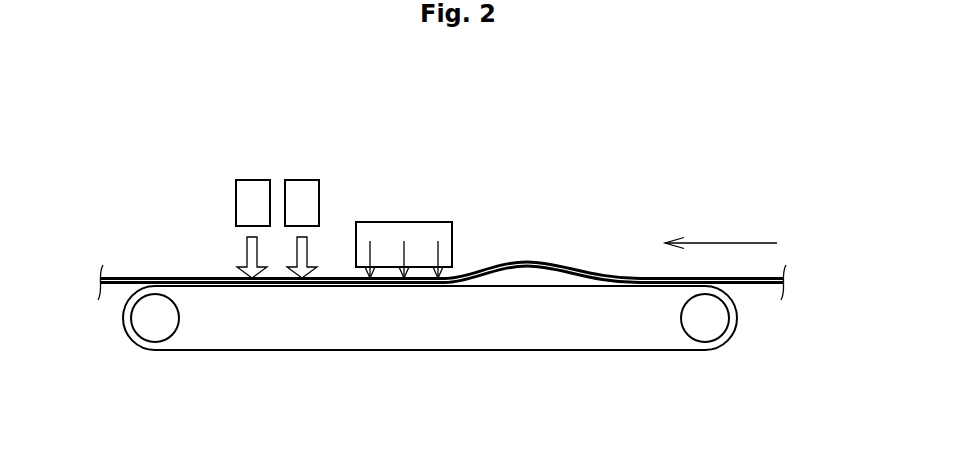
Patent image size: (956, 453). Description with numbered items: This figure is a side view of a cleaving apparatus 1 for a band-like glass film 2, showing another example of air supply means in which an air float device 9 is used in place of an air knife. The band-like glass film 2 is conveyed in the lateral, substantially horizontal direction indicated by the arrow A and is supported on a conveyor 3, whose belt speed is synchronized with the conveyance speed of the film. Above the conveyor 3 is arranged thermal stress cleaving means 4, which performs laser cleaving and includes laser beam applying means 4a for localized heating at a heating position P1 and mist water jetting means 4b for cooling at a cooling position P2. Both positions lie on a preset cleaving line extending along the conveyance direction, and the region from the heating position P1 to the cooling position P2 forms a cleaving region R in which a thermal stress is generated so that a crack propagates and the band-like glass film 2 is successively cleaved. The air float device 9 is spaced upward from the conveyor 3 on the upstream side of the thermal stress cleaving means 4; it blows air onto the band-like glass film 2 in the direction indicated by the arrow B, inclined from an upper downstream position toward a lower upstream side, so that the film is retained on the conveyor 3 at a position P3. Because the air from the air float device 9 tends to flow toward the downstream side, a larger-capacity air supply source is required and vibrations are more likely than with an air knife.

The cleaving apparatus 1 is at (498, 182).
The band-like glass film 2 is at (757, 292).
The conveyor 3 is at (584, 350).
The thermal stress cleaving means 4 is at (277, 154).
The laser beam applying means 4a is at (302, 176).
The mist water jetting means 4b is at (251, 180).
The air float device 9 is at (427, 222).
The arrow A is at (721, 236).
The arrow B is at (438, 250).
The heating position P1 is at (304, 278).
The cooling position P2 is at (248, 278).
The position P3 is at (365, 293).
The cleaving region R is at (303, 289).